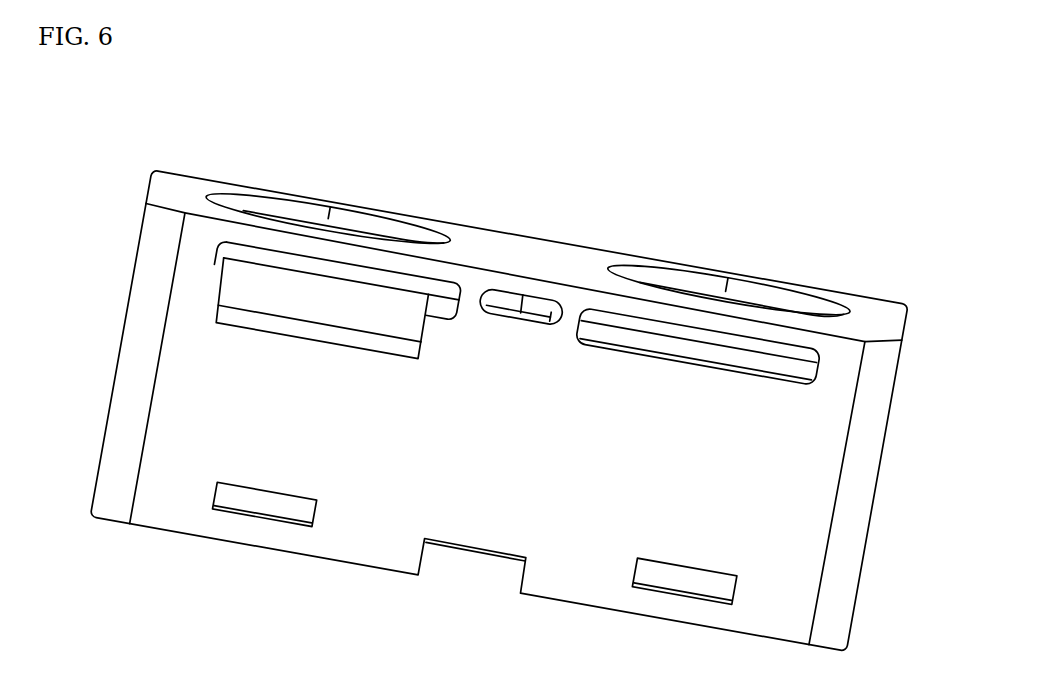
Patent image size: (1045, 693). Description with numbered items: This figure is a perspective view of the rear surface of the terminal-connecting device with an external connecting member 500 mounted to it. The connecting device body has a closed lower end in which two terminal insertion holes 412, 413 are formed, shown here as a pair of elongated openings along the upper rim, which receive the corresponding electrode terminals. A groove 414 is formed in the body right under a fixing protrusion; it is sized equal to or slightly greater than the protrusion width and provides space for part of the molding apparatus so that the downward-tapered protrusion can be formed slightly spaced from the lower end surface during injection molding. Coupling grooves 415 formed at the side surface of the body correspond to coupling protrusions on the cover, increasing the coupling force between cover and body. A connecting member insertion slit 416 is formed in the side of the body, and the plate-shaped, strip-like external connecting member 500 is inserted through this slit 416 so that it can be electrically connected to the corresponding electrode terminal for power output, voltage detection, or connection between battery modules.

The terminal insertion hole 412 is at (383, 230).
The terminal insertion hole 413 is at (781, 294).
The groove 414 is at (522, 317).
The coupling groove 415 is at (275, 513).
The connecting member insertion slit 416 is at (222, 244).
The external connecting member 500 is at (347, 318).